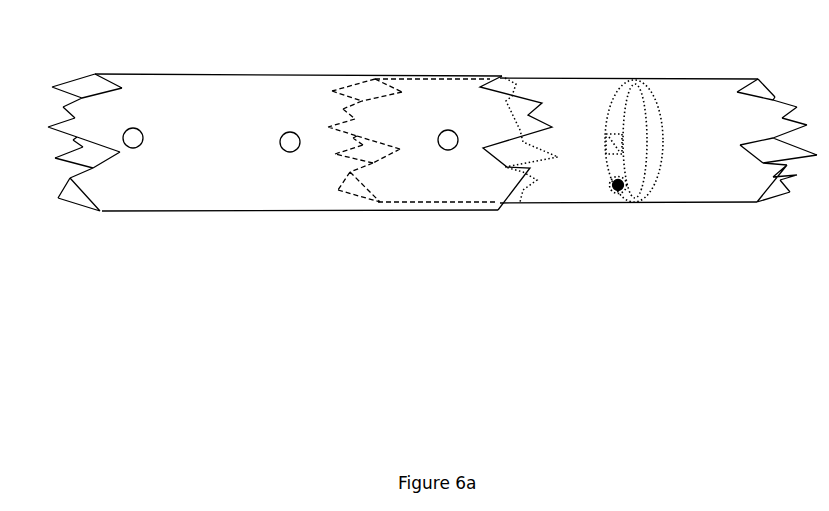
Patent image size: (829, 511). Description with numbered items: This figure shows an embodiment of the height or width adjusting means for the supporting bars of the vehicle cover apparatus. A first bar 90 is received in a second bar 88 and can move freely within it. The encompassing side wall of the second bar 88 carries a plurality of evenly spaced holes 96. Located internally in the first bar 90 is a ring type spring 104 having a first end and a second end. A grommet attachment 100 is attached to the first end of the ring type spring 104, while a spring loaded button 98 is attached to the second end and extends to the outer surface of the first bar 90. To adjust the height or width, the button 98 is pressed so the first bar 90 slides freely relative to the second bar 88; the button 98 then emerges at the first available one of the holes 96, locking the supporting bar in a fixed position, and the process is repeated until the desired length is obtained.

The second bar 88 is at (210, 95).
The first bar 90 is at (568, 95).
The holes 96 is at (137, 148).
The spring loaded button 98 is at (618, 195).
The grommet attachment 100 is at (607, 147).
The ring type spring 104 is at (653, 170).